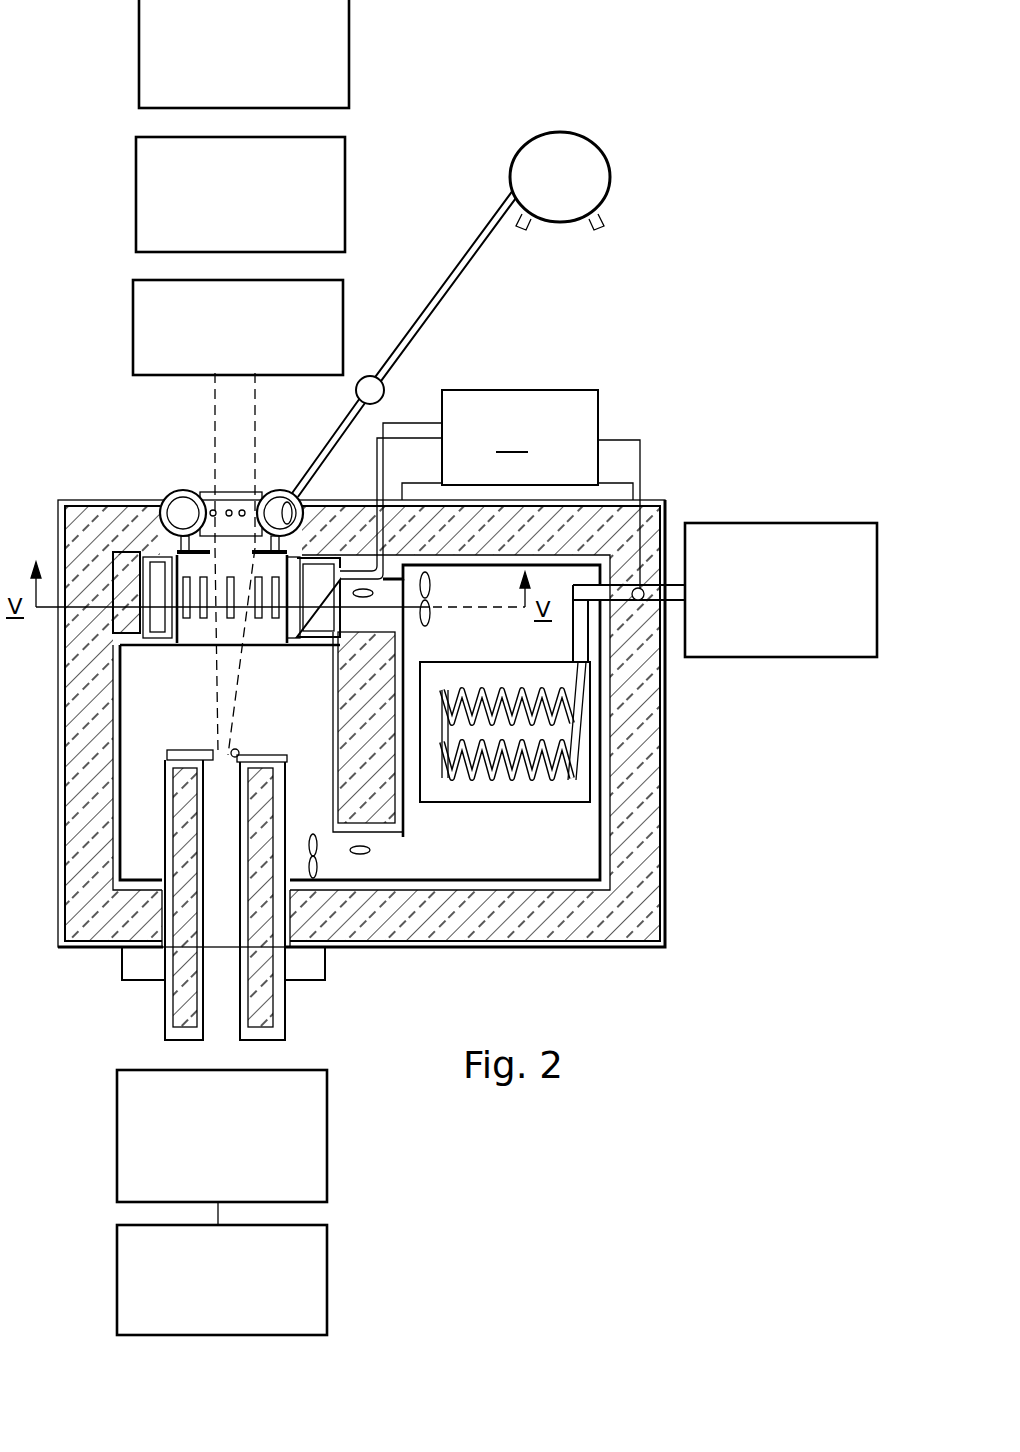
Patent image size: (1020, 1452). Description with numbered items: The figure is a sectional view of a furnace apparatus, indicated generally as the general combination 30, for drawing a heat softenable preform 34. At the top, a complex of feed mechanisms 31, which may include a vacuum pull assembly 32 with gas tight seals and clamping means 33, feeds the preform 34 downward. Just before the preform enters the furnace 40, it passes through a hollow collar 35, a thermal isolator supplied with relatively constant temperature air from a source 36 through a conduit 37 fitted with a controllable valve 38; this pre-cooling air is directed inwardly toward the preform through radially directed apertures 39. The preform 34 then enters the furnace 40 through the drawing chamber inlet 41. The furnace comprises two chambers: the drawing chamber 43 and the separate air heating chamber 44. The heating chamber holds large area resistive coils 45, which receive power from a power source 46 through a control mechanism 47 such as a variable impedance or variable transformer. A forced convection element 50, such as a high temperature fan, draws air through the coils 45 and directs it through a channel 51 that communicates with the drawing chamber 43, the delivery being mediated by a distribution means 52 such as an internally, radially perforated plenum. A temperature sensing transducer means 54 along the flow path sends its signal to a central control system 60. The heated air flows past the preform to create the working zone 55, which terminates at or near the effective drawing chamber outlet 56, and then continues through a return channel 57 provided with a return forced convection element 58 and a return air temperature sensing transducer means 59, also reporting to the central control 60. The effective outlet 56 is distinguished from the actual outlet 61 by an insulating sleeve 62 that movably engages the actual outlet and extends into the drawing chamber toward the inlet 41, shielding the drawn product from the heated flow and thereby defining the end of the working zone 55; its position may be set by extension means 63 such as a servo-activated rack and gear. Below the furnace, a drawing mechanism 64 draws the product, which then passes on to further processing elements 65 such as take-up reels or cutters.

The general combination 30 is at (684, 500).
The feed mechanisms 31 is at (349, 63).
The vacuum pull assembly 32 is at (330, 217).
The clamping means 33 is at (326, 323).
The preform 34 is at (258, 412).
The hollow collar 35 is at (278, 490).
The source 36 is at (608, 188).
The conduit 37 is at (440, 305).
The controllable valve 38 is at (385, 392).
The apertures 39 is at (229, 505).
The furnace 40 is at (90, 500).
The drawing chamber inlet 41 is at (200, 530).
The drawing chamber 43 is at (138, 707).
The air heating chamber 44 is at (587, 850).
The resistive coils 45 is at (590, 757).
The power source 46 is at (828, 535).
The control mechanism 47 is at (642, 590).
The forced convection element 50 is at (432, 600).
The channel 51 is at (397, 617).
The distribution means 52 is at (192, 632).
The temperature sensing transducer means 54 is at (353, 593).
The working zone 55 is at (262, 653).
The effective drawing chamber outlet 56 is at (240, 753).
The return channel 57 is at (387, 842).
The return forced convection element 58 is at (312, 833).
The return air temperature sensing transducer means 59 is at (425, 864).
The central control system 60 is at (517, 445).
The actual outlet 61 is at (168, 905).
The insulating sleeve 62 is at (166, 832).
The extension means 63 is at (310, 972).
The drawing mechanism 64 is at (314, 1133).
The processing elements 65 is at (314, 1273).